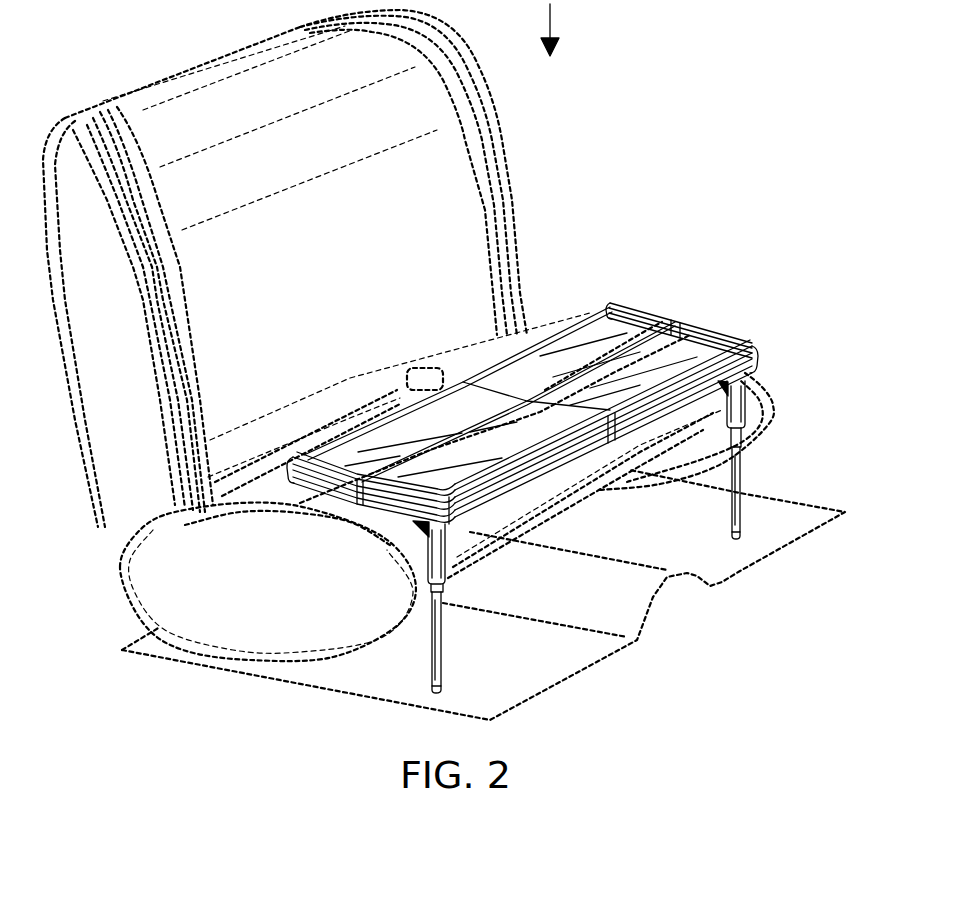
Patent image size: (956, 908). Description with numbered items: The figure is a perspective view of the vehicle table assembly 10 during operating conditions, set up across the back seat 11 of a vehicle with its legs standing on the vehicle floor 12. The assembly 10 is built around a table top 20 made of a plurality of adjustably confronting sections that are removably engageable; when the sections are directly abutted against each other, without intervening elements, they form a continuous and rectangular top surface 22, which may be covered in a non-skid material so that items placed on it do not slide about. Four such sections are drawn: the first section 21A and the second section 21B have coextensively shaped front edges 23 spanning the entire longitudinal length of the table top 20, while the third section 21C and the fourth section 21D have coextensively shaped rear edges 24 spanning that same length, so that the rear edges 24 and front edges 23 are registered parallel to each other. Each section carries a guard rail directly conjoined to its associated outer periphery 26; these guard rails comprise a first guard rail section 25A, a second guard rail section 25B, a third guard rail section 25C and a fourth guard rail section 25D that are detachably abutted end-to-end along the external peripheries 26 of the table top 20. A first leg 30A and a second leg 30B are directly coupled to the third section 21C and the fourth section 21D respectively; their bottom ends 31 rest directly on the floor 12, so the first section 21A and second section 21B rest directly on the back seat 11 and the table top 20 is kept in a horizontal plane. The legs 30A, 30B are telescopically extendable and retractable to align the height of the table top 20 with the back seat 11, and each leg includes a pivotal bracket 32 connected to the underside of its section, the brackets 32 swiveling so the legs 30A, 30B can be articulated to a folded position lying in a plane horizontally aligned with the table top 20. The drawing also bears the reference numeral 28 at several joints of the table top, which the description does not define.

The assembly 10 is at (549, 28).
The back seat 11 is at (233, 53).
The floor 12 is at (320, 680).
The table top 20 is at (531, 464).
The first section 21A is at (337, 453).
The second section 21B is at (518, 350).
The third section 21C is at (637, 390).
The fourth section 21D is at (478, 465).
The top surface 22 is at (527, 401).
The front edges 23 is at (561, 318).
The rear edges 24 is at (717, 360).
The first guard rail section 25A is at (300, 487).
The second guard rail section 25B is at (627, 303).
The third guard rail section 25C is at (753, 340).
The fourth guard rail section 25D is at (428, 530).
The outer peripheries 26 is at (617, 303).
The hinge joint 28 is at (460, 380).
The first leg 30A is at (795, 456).
The second leg 30B is at (584, 558).
The bottom ends 31 is at (435, 692).
The pivotal bracket 32 is at (418, 530).